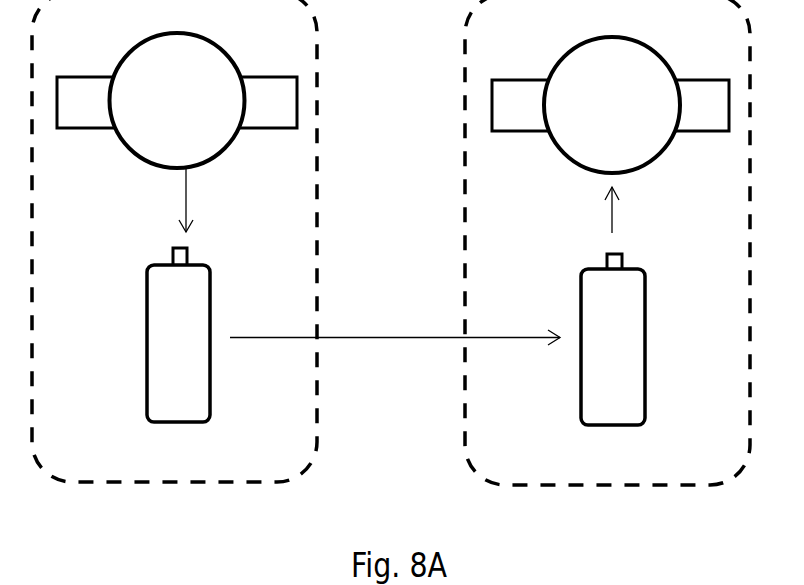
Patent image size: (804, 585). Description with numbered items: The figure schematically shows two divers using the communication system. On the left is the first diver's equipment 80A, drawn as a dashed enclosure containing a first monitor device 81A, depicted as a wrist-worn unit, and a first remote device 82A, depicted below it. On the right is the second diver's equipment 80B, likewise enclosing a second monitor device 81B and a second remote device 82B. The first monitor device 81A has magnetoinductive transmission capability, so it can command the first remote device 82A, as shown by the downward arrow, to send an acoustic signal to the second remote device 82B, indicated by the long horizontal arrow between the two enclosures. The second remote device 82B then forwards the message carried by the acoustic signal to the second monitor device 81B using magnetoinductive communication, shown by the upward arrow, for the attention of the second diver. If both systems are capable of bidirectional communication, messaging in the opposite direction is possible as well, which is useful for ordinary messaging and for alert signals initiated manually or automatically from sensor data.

The first diver's equipment 80A is at (117, 452).
The second diver's equipment 80B is at (549, 455).
The first monitor device 81A is at (205, 118).
The second monitor device 81B is at (640, 123).
The first remote device 82A is at (162, 373).
The second remote device 82B is at (596, 377).